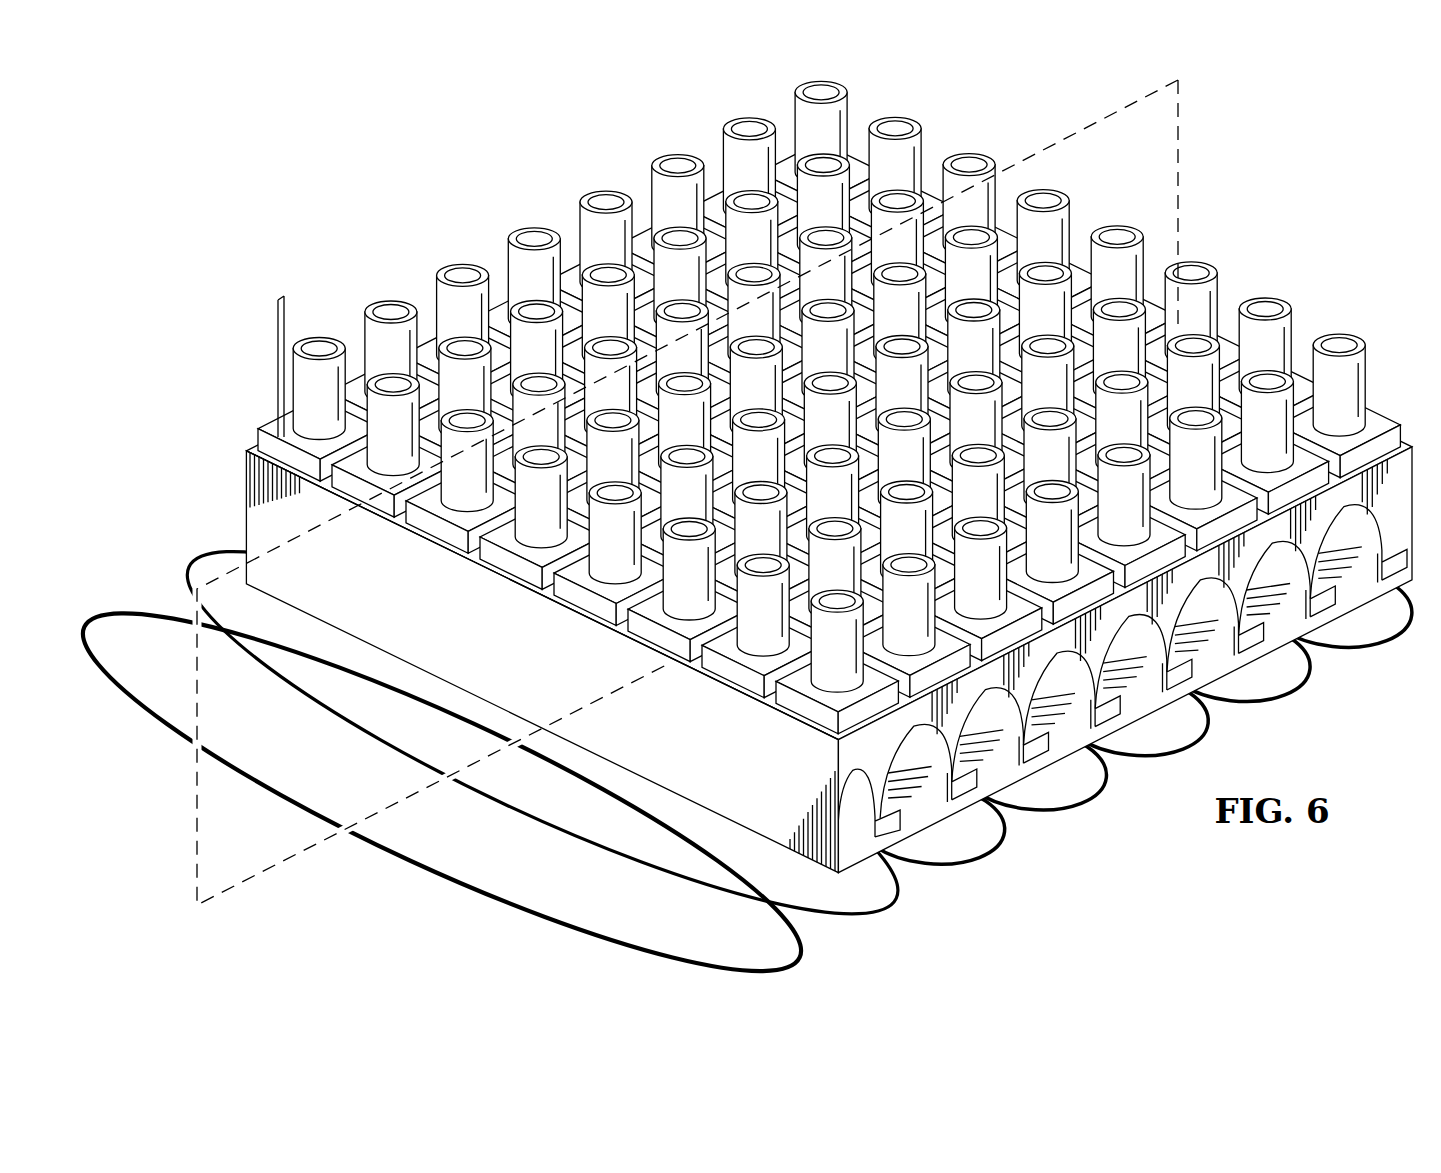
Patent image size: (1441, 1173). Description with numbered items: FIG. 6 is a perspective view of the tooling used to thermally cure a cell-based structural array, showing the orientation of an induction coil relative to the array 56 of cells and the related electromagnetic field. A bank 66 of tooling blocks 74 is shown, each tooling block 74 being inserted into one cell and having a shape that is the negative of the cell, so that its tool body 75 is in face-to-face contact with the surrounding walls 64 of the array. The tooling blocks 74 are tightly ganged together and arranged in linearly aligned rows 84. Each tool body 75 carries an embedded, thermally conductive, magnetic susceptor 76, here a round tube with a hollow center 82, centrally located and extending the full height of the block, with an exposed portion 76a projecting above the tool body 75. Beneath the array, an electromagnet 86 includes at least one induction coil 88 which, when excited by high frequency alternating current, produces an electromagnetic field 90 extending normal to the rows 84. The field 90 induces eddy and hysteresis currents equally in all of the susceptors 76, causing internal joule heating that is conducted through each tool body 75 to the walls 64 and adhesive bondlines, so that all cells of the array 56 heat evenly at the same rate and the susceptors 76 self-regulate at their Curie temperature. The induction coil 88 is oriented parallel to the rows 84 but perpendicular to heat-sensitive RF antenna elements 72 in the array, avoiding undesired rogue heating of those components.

The array 56 is at (651, 684).
The walls 64 is at (481, 683).
The bank 66 is at (812, 476).
The RF antenna elements 72 is at (1122, 648).
The tooling blocks 74 is at (832, 515).
The tool body 75 is at (262, 442).
The susceptor 76 is at (859, 386).
The exposed portion 76a is at (277, 369).
The hollow center 82 is at (679, 153).
The rows 84 is at (356, 270).
The electromagnet 86 is at (472, 907).
The induction coil 88 is at (412, 863).
The electromagnetic field 90 is at (1180, 144).